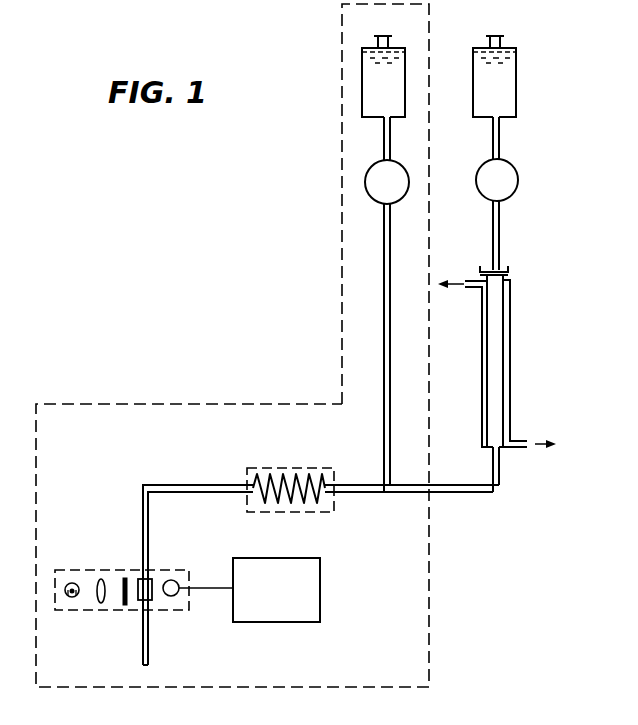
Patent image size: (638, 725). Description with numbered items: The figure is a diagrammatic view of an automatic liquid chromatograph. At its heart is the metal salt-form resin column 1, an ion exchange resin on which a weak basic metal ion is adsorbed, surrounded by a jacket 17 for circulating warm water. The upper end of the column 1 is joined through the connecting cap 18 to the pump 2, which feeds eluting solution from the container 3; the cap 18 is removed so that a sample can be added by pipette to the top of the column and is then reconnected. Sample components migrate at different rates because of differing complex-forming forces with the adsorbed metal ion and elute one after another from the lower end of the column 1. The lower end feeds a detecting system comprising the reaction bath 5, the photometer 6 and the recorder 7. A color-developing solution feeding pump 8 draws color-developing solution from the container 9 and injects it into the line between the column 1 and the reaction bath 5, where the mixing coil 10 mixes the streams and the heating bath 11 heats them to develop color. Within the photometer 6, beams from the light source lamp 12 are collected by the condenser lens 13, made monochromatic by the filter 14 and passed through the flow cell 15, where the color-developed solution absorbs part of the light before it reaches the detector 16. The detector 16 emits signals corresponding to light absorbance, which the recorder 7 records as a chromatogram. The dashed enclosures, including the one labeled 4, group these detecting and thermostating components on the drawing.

The metal salt-form resin column 1 is at (497, 291).
The pump 2 is at (513, 188).
The container 3 is at (516, 88).
The housing enclosure 4 is at (431, 519).
The reaction bath 5 is at (318, 467).
The photometer 6 is at (80, 569).
The recorder 7 is at (281, 601).
The color-developing solution feeding pump 8 is at (366, 190).
The container for the color-developing solution 9 is at (362, 97).
The mixing coil 10 is at (278, 471).
The heating bath 11 is at (258, 471).
The light source lamp 12 is at (66, 598).
The condenser lens 13 is at (98, 603).
The filter 14 is at (125, 606).
The flow cell 15 is at (152, 598).
The detector 16 is at (178, 591).
The jacket 17 is at (507, 326).
The connecting cap 18 is at (506, 270).